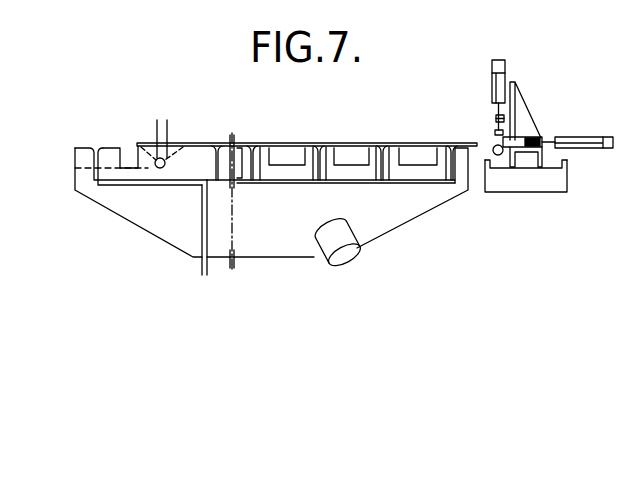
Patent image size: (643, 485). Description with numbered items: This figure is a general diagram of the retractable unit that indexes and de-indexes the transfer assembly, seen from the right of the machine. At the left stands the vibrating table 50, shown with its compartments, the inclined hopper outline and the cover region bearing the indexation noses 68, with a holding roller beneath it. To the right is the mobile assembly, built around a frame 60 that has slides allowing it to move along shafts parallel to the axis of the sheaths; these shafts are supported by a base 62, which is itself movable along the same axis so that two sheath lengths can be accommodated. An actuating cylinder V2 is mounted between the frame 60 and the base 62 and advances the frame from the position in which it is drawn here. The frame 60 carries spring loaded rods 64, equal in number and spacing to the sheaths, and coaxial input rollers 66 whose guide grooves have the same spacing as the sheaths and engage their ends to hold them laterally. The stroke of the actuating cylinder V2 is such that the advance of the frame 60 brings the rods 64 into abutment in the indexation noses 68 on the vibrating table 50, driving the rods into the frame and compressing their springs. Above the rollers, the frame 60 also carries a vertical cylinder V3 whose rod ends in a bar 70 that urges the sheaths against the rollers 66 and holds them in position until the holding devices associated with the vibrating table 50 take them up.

The vibrating table 50 is at (395, 208).
The indexation noses 68 is at (188, 143).
The frame 60 is at (522, 120).
The base 62 is at (557, 178).
The spring loaded rods 64 is at (522, 143).
The coaxial input rollers 66 is at (498, 155).
The bar 70 is at (497, 130).
The actuating cylinder V2 is at (584, 147).
The vertical cylinder V3 is at (486, 87).